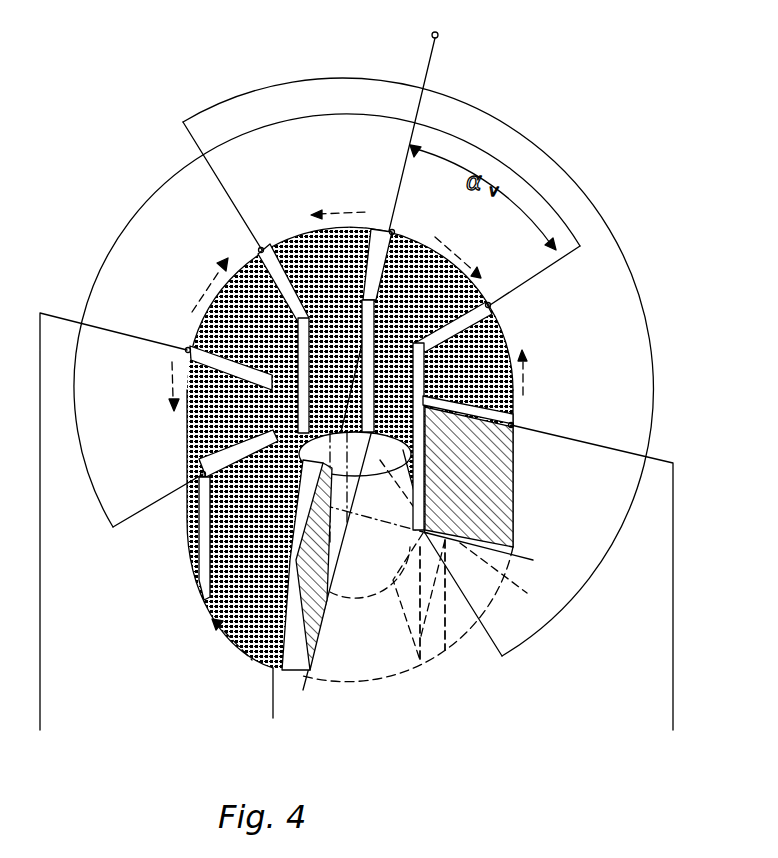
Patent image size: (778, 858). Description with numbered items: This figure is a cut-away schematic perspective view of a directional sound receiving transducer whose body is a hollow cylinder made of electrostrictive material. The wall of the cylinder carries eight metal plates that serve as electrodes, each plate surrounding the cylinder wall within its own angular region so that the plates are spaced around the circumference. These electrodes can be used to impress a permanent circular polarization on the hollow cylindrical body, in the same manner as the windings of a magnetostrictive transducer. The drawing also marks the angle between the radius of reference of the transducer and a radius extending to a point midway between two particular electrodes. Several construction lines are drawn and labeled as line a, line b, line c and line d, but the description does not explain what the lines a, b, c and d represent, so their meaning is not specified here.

The reference line a is at (275, 708).
The reference line b is at (111, 538).
The reference axis c is at (395, 217).
The reference line d is at (602, 594).